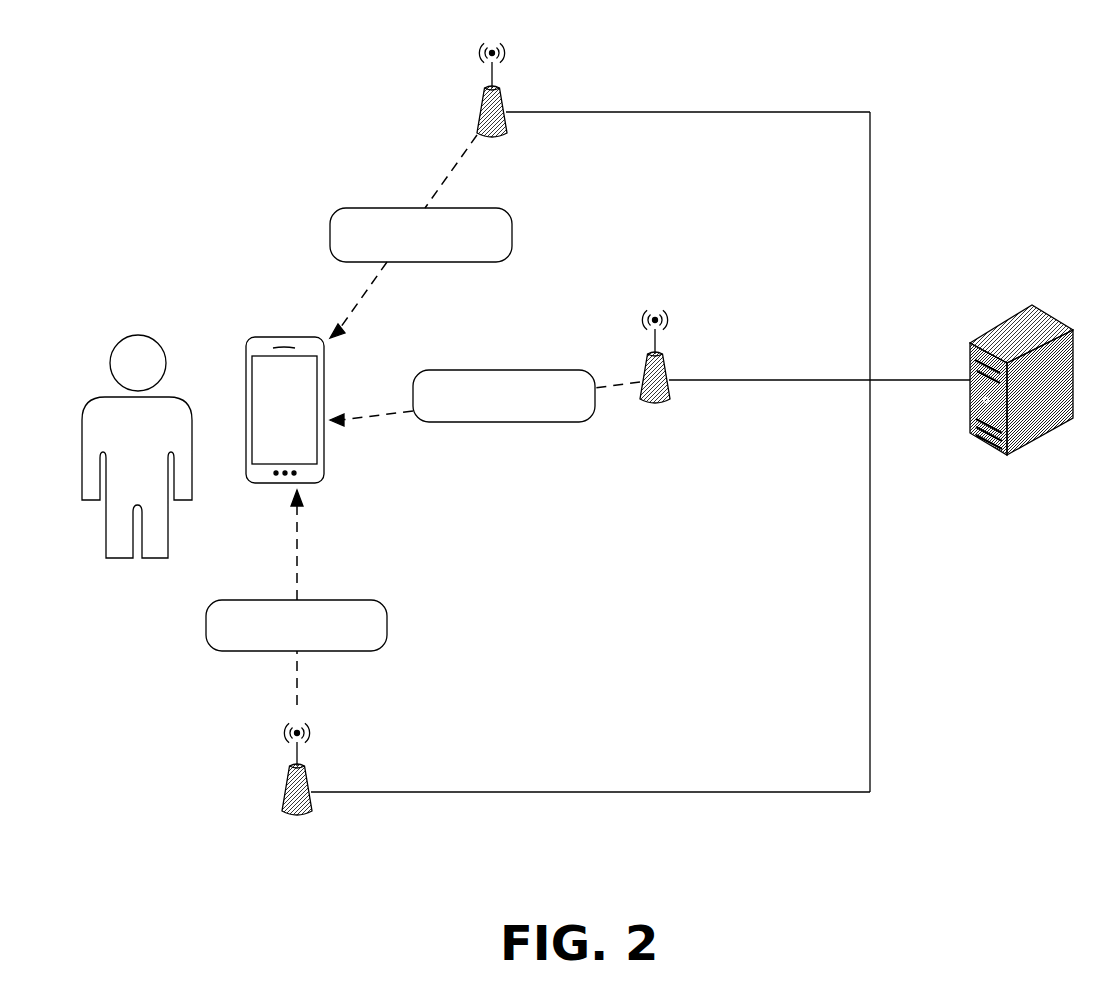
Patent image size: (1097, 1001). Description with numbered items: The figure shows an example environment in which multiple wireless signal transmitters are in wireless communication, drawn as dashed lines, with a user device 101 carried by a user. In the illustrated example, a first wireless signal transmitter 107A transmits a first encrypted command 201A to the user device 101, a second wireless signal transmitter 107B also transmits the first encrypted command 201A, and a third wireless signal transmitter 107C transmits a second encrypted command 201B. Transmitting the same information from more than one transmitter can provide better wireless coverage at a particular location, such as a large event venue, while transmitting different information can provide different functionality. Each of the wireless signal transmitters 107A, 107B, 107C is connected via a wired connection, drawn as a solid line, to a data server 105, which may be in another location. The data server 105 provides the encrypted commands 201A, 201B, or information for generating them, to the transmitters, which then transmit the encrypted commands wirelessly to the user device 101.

The user device 101 is at (243, 337).
The data server 105 is at (988, 452).
The first wireless signal transmitter 107A is at (513, 138).
The second wireless signal transmitter 107B is at (678, 405).
The third wireless signal transmitter 107C is at (319, 818).
The first encrypted command 201A is at (485, 280).
The second encrypted command 201B is at (296, 597).